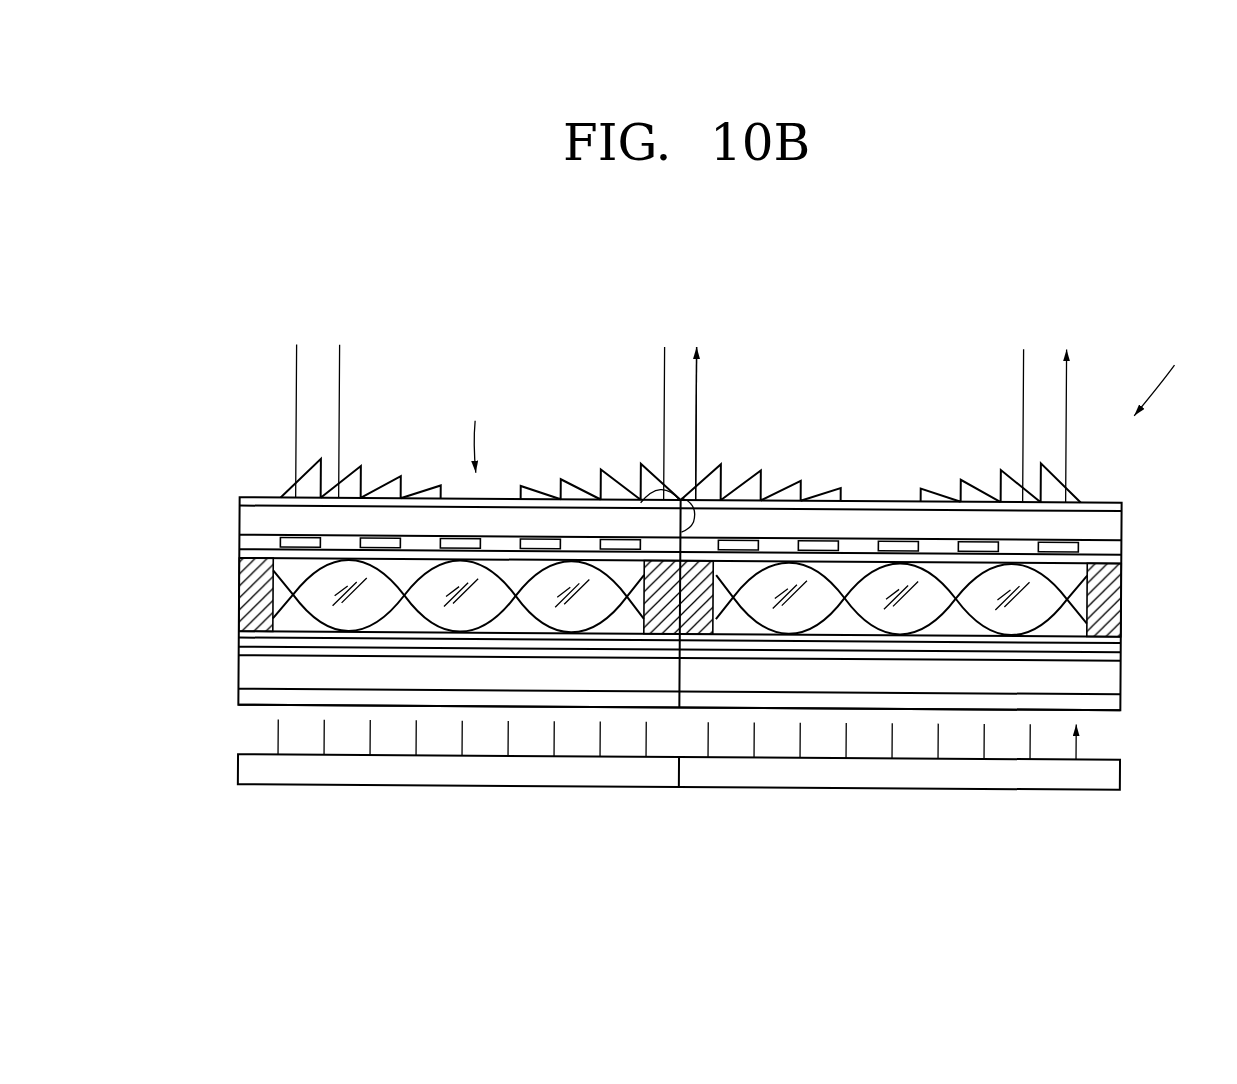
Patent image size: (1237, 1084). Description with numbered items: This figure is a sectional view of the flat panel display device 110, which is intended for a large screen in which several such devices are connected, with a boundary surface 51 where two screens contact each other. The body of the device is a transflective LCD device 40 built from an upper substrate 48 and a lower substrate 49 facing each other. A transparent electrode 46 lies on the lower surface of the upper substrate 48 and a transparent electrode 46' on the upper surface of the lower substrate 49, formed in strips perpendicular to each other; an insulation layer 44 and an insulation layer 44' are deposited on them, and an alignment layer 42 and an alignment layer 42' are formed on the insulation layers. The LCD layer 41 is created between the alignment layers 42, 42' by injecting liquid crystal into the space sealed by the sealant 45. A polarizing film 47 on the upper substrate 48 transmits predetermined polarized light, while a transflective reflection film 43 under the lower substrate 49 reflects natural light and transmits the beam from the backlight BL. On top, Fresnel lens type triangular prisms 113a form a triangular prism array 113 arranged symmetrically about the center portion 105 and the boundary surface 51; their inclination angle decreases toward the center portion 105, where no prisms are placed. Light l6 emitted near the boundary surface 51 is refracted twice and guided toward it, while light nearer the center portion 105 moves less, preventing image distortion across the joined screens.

The flat panel display device 110 is at (1172, 375).
The triangular prism array 113 is at (317, 327).
The triangular prism 113a is at (614, 478).
The center portion 105 is at (474, 433).
The boundary surface 51 is at (680, 500).
The light l6 is at (697, 397).
The LCD device 40 is at (170, 508).
The polarizing film 47 is at (1121, 504).
The upper substrate 48 is at (1121, 522).
The transparent electrode 46 is at (735, 545).
The insulation layer 44 is at (648, 546).
The alignment layer 42 is at (715, 565).
The LCD layer 41 is at (327, 586).
The sealant 45 is at (243, 603).
The alignment layer 42' is at (718, 632).
The insulation layer 44' is at (644, 649).
The transparent electrode 46' is at (718, 657).
The lower substrate 49 is at (1121, 683).
The transflective reflection film 43 is at (1121, 701).
The backlight BL is at (1121, 774).